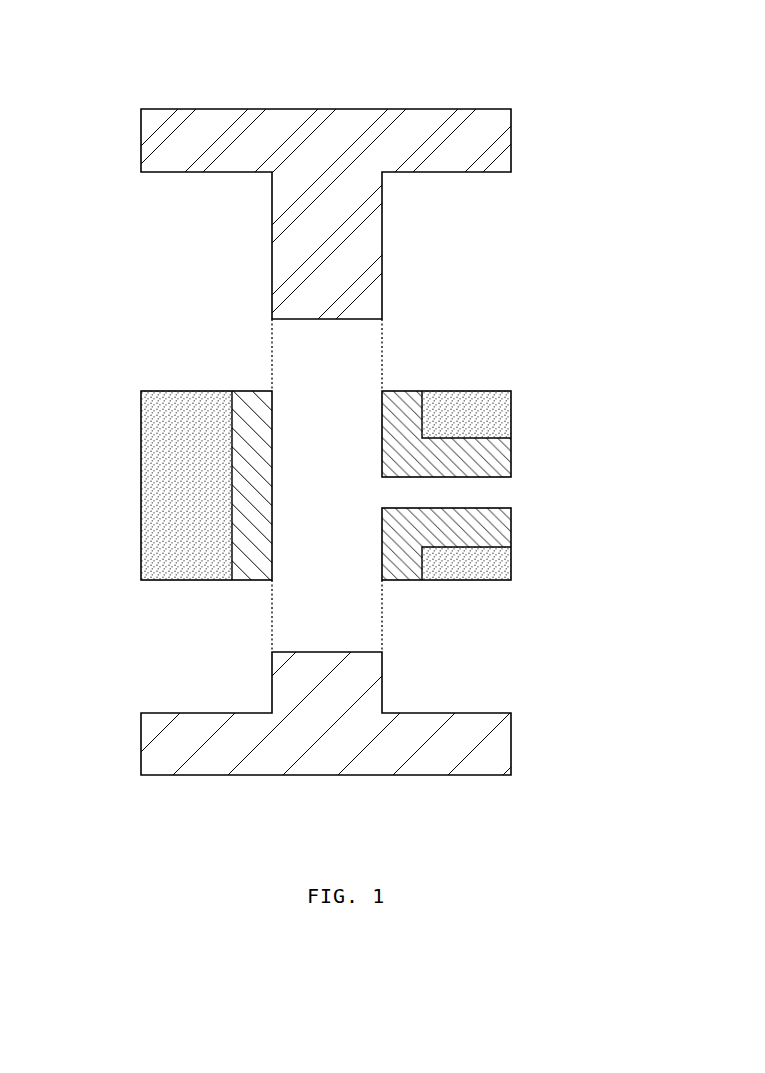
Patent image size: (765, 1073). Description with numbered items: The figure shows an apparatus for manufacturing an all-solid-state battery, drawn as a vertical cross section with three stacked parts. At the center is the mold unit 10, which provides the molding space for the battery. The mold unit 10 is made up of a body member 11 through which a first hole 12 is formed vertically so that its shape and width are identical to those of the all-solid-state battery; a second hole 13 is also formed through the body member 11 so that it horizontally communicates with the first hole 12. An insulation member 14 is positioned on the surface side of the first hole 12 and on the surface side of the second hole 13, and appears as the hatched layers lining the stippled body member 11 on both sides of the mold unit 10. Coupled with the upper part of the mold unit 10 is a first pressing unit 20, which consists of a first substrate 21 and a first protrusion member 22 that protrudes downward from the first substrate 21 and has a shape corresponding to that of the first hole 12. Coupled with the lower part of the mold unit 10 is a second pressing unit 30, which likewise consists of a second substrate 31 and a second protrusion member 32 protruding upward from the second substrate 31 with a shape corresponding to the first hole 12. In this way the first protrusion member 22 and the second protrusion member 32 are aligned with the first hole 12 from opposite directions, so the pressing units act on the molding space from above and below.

The mold unit 10 is at (165, 379).
The body member 11 is at (152, 445).
The first hole 12 is at (301, 572).
The second hole 13 is at (504, 493).
The insulation member 14 is at (251, 396).
The first pressing unit 20 is at (381, 162).
The first substrate 21 is at (512, 140).
The first protrusion member 22 is at (368, 257).
The second pressing unit 30 is at (374, 756).
The second substrate 31 is at (512, 745).
The second protrusion member 32 is at (367, 685).